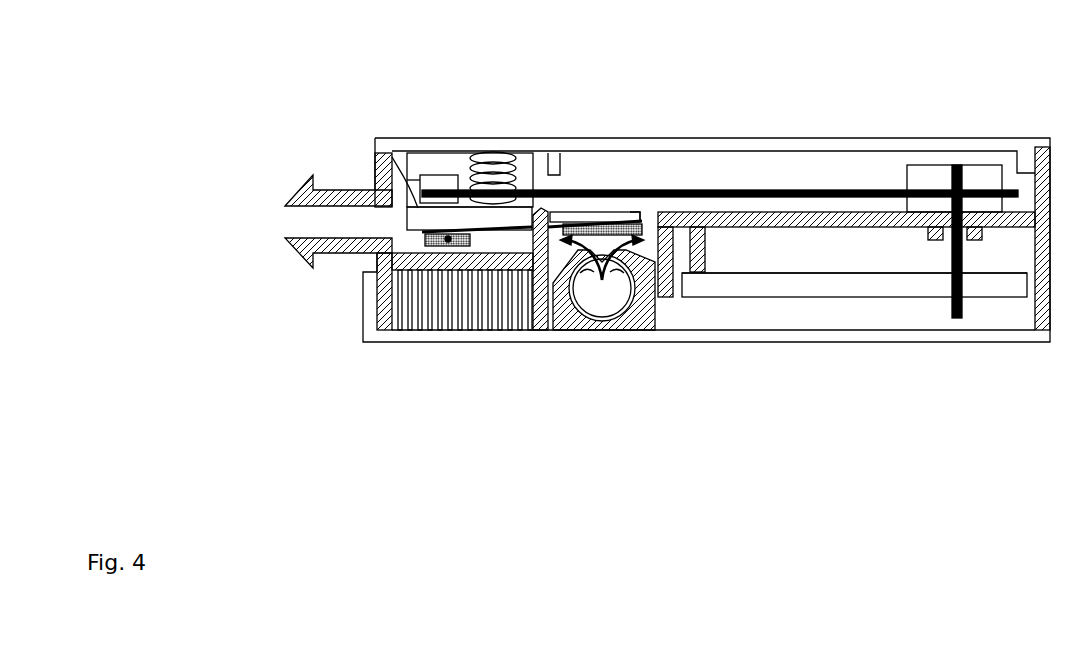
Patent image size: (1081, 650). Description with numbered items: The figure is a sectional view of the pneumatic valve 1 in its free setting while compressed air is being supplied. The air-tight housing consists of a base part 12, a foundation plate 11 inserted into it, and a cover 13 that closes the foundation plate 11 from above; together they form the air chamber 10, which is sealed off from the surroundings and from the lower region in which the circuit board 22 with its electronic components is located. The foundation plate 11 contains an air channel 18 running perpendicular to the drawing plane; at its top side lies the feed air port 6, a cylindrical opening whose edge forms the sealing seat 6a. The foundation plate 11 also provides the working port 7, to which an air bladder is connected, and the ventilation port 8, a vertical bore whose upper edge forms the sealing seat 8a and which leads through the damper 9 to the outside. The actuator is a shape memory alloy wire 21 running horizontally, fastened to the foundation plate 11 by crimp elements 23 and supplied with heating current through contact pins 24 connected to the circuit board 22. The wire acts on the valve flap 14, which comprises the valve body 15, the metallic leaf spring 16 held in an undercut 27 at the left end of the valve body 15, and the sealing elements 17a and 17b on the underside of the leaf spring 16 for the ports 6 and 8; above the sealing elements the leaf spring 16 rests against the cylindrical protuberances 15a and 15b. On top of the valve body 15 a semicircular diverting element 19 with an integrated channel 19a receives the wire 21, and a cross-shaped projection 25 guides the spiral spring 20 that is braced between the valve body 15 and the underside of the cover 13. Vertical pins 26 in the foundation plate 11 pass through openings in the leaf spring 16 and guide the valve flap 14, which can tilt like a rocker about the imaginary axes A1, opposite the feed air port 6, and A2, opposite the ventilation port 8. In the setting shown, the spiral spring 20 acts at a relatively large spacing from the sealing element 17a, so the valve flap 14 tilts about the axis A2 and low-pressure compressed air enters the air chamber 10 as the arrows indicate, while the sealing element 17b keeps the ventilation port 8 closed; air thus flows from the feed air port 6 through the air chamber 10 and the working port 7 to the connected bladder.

The pneumatic valve 1 is at (751, 75).
The feed air port 6 is at (573, 253).
The sealing seat 6a is at (578, 245).
The working port 7 is at (290, 212).
The ventilation port 8 is at (446, 245).
The sealing seat 8a is at (378, 278).
The damper 9 is at (509, 310).
The air chamber 10 is at (707, 151).
The foundation plate 11 is at (828, 226).
The base part 12 is at (790, 342).
The cover 13 is at (777, 151).
The valve flap 14 is at (637, 217).
The valve body 15 is at (577, 210).
The cylindrical protuberance 15a is at (638, 215).
The cylindrical protuberance 15b is at (412, 182).
The leaf spring 16 is at (542, 208).
The sealing element 17a is at (590, 226).
The sealing element 17b is at (430, 240).
The air channel 18 is at (600, 318).
The diverting element 19 is at (457, 160).
The channel 19a is at (440, 182).
The spiral spring 20 is at (508, 158).
The SMA wire 21 is at (823, 189).
The circuit board 22 is at (884, 286).
The crimp element 23 is at (935, 170).
The contact pin 24 is at (965, 260).
The cross-shaped projection 25 is at (497, 153).
The pin 26 is at (552, 165).
The undercut 27 is at (390, 158).
The imaginary axis A1 is at (565, 308).
The imaginary axis A2 is at (450, 250).